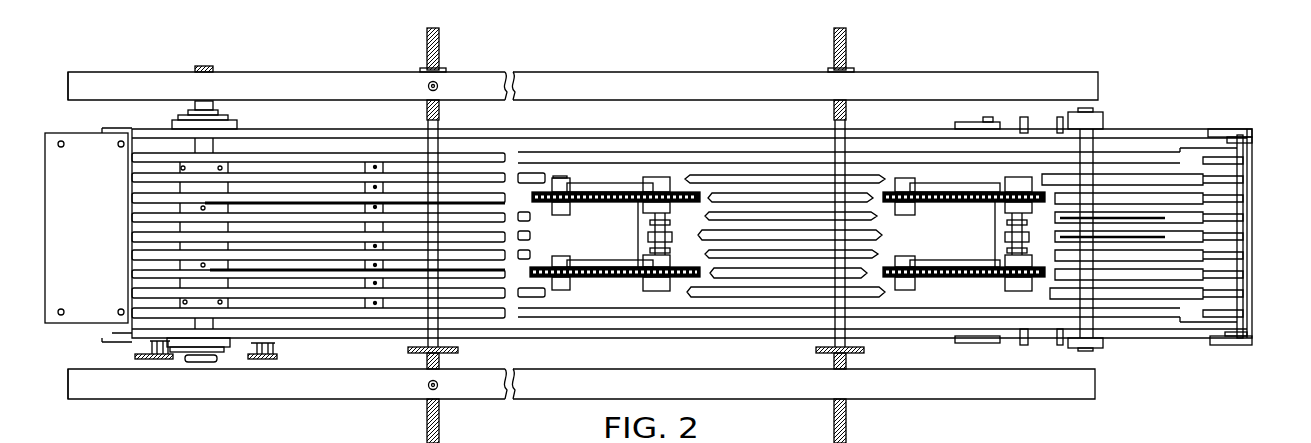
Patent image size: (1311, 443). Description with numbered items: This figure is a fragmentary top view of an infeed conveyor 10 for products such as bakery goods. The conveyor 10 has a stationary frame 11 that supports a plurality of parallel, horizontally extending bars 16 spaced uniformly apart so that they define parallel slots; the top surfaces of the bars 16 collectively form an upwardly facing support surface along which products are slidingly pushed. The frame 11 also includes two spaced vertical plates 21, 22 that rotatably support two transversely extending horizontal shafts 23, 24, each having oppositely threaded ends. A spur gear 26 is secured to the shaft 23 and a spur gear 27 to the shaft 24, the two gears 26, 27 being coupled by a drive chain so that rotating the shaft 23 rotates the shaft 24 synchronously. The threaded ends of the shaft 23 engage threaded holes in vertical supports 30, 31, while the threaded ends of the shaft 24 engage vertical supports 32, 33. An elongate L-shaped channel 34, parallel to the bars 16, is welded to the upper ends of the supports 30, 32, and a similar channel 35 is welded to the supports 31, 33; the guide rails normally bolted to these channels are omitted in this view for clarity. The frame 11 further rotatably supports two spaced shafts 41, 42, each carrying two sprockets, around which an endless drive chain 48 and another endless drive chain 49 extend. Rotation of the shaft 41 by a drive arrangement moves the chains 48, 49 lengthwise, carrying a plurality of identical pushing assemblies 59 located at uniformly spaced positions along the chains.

The infeed conveyor 10 is at (1176, 88).
The stationary frame 11 is at (1259, 155).
The bars 16 is at (294, 152).
The vertical plate 21 is at (554, 126).
The vertical plate 22 is at (553, 340).
The shaft 23 is at (441, 40).
The shaft 24 is at (848, 45).
The spur gear 26 is at (410, 350).
The spur gear 27 is at (865, 350).
The vertical support 30 is at (422, 401).
The vertical support 31 is at (421, 67).
The vertical support 32 is at (848, 400).
The vertical support 33 is at (854, 70).
The L-shaped channel 34 is at (288, 391).
The L-shaped channel 35 is at (239, 83).
The shaft 41 is at (200, 328).
The shaft 42 is at (1093, 325).
The endless drive chain 48 is at (541, 267).
The endless drive chain 49 is at (540, 204).
The pushing assembly 59 is at (599, 185).